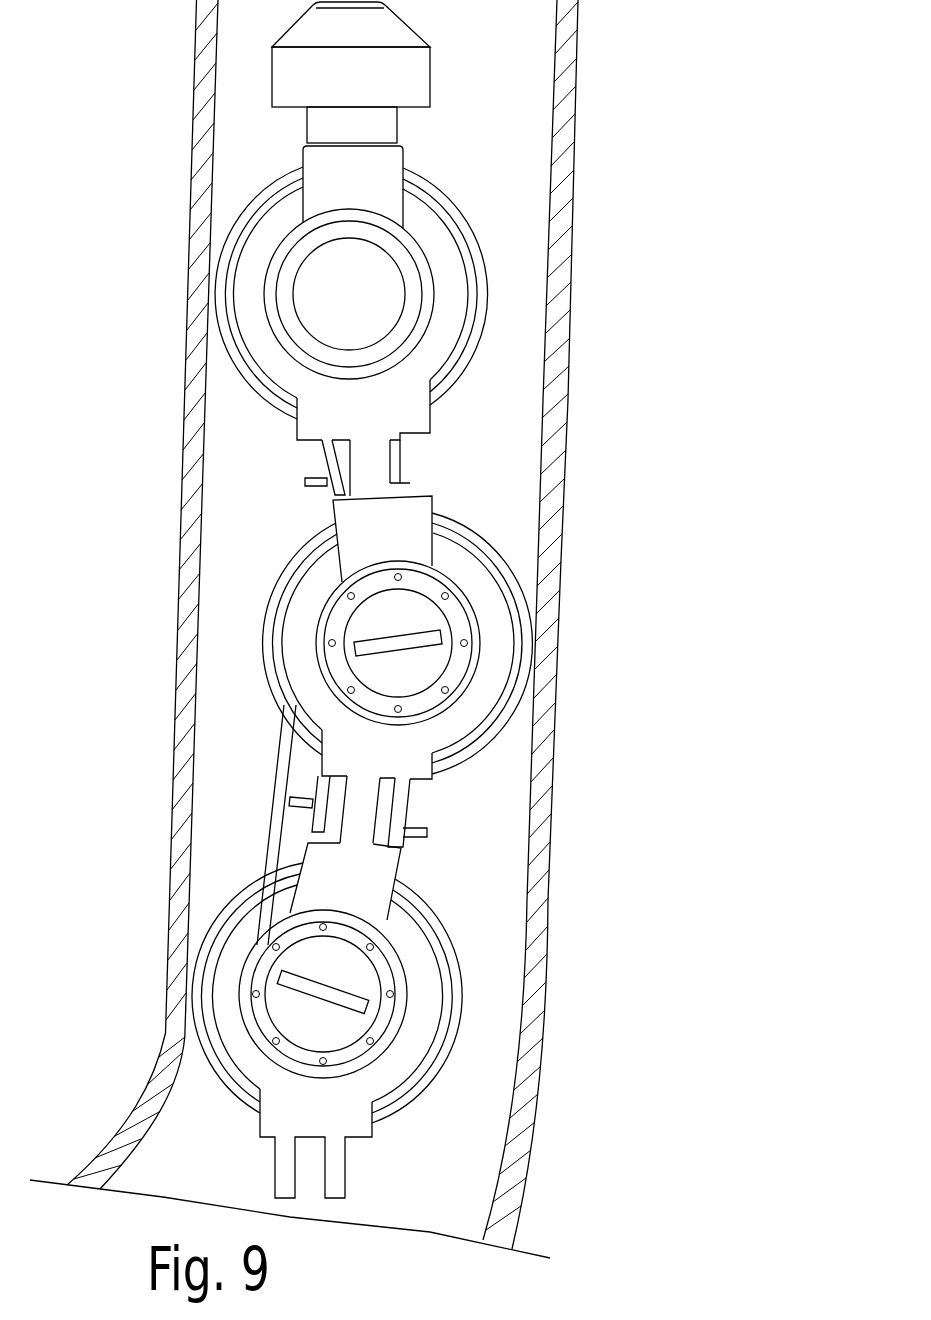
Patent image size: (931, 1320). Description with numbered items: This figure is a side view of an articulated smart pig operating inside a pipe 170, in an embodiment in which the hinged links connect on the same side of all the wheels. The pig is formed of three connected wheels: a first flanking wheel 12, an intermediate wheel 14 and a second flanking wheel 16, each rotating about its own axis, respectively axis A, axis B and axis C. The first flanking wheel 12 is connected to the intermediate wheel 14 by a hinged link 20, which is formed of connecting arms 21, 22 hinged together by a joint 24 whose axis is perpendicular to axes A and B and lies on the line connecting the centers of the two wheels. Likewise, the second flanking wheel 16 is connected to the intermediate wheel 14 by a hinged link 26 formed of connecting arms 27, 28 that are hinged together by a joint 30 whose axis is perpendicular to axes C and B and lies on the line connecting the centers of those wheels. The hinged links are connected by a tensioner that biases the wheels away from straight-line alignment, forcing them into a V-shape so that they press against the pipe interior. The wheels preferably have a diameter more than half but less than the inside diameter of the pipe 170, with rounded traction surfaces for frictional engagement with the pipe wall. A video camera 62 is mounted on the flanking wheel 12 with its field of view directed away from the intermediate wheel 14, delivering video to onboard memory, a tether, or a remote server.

The video camera 62 is at (390, 24).
The first flanking wheel 12 is at (362, 287).
The intermediate wheel 14 is at (376, 643).
The second flanking wheel 16 is at (306, 1030).
The connecting arm 22 is at (397, 405).
The joint 24 is at (300, 478).
The hinged link 20 is at (398, 468).
The connecting arm 21 is at (345, 520).
The connecting arm 27 is at (405, 772).
The hinged link 26 is at (388, 827).
The connecting arm 28 is at (380, 888).
The joint 30 is at (303, 808).
The pipe 170 is at (182, 650).
The axis A is at (352, 292).
The axis B is at (397, 645).
The axis C is at (323, 993).